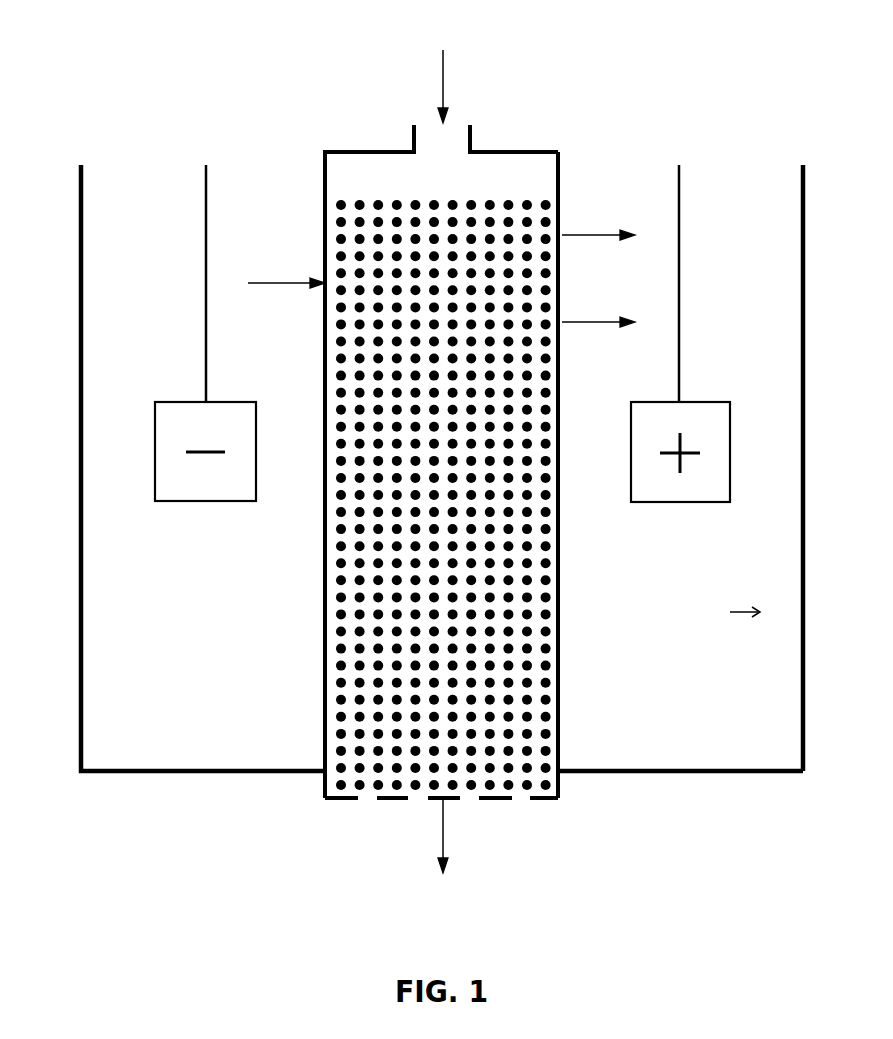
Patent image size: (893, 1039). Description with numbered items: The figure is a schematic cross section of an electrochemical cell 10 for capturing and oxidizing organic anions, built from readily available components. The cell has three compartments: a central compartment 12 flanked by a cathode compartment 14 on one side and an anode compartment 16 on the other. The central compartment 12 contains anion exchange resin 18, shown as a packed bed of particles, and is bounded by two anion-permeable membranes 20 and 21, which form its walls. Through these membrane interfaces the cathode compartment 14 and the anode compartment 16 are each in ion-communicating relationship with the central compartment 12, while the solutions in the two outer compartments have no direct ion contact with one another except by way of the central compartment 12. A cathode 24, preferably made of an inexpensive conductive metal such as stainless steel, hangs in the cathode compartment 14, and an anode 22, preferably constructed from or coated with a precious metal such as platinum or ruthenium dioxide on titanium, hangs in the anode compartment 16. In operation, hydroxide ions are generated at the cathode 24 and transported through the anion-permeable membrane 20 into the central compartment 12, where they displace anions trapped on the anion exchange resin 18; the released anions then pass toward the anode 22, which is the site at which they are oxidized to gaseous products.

The electrochemical cell 10 is at (134, 105).
The central compartment 12 is at (537, 746).
The cathode compartment 14 is at (217, 747).
The anode compartment 16 is at (760, 340).
The anion exchange resin 18 is at (548, 659).
The anion-permeable membrane 20 is at (326, 567).
The anion-permeable membrane 21 is at (558, 525).
The anode 22 is at (730, 446).
The cathode 24 is at (155, 435).